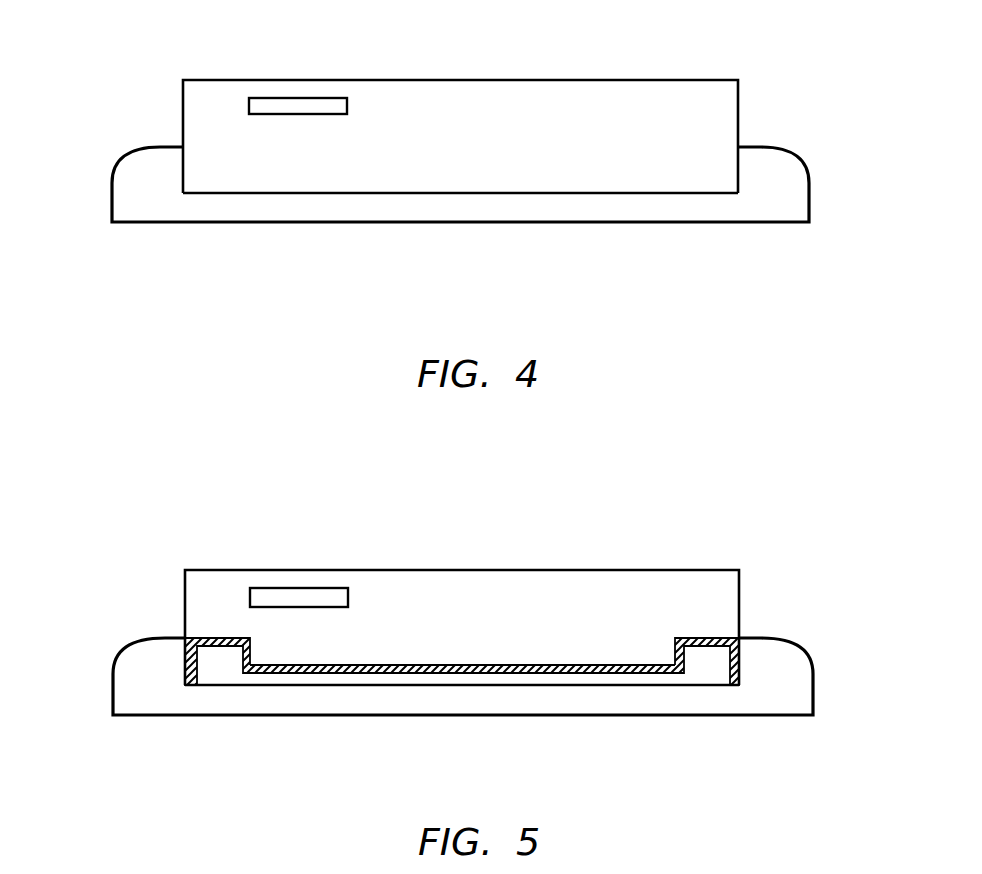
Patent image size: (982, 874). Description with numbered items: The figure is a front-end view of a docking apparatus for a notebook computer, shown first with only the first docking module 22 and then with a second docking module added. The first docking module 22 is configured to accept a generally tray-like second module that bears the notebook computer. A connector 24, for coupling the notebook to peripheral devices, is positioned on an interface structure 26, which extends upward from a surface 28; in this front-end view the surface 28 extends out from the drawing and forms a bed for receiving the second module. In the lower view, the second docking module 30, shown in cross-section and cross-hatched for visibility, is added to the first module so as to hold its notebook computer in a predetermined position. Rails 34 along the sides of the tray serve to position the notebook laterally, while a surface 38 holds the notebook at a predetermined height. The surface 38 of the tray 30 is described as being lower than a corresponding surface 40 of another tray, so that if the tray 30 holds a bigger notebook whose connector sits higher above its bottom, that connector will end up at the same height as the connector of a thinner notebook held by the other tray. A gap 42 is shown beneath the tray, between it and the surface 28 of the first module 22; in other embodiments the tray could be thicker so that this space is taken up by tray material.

In FIG. 4, the first docking module 22 is at (760, 115).
In FIG. 5, the first docking module 22 is at (137, 636).
In FIG. 4, the connector 24 is at (305, 98).
In FIG. 4, the interface structure 26 is at (572, 80).
In FIG. 5, the interface structure 26 is at (607, 570).
In FIG. 4, the surface 28 is at (431, 181).
In FIG. 5, the second docking module 30 is at (308, 588).
In FIG. 5, the rail 34 is at (252, 640).
In FIG. 5, the surface 38 is at (424, 656).
In FIG. 5, the surface 40 is at (467, 663).
In FIG. 5, the gap 42 is at (408, 680).